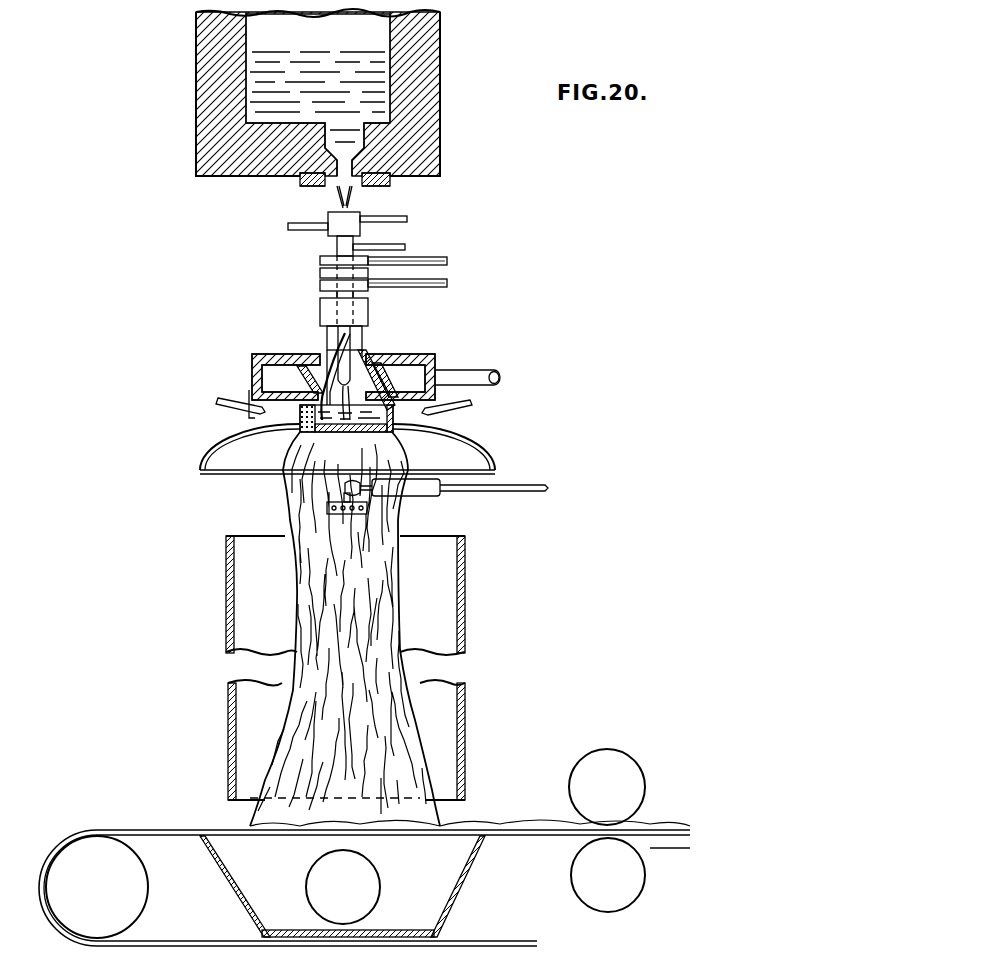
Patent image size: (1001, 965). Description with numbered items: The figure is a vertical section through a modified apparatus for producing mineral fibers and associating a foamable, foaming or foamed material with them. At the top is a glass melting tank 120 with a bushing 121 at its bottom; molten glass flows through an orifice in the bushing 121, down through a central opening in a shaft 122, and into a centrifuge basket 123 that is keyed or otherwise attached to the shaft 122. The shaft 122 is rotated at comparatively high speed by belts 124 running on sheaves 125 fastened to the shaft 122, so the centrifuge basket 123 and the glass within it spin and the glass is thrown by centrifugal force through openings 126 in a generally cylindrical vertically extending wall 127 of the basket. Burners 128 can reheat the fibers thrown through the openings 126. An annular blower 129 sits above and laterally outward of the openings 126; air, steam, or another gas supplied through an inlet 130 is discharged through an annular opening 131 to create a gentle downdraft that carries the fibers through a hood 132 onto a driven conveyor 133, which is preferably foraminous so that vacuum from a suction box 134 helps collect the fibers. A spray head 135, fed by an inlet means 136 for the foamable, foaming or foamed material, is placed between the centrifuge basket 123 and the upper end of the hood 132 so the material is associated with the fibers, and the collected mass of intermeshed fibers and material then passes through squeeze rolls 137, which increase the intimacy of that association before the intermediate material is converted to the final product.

The glass melting tank 120 is at (440, 66).
The bushing 121 is at (358, 198).
The shaft 122 is at (328, 244).
The centrifuge basket 123 is at (420, 368).
The belts 124 is at (447, 284).
The sheaves 125 is at (320, 270).
The openings 126 is at (300, 422).
The generally cylindrical vertically extending wall 127 is at (298, 362).
The burners 128 is at (220, 401).
The annular blower 129 is at (382, 380).
The inlet 130 is at (500, 371).
The annular opening 131 is at (293, 390).
The hood 132 is at (465, 590).
The conveyor 133 is at (205, 830).
The suction box 134 is at (465, 893).
The spray head 135 is at (345, 527).
The inlet means 136 is at (490, 496).
The squeeze rolls 137 is at (625, 757).